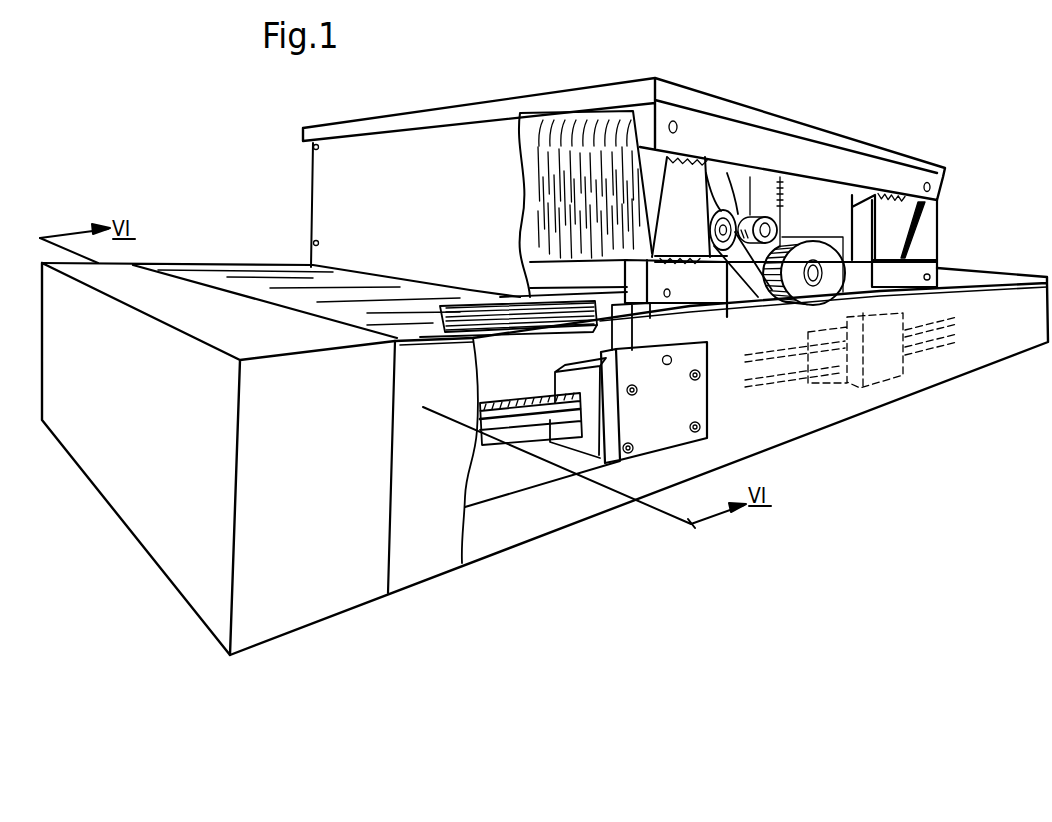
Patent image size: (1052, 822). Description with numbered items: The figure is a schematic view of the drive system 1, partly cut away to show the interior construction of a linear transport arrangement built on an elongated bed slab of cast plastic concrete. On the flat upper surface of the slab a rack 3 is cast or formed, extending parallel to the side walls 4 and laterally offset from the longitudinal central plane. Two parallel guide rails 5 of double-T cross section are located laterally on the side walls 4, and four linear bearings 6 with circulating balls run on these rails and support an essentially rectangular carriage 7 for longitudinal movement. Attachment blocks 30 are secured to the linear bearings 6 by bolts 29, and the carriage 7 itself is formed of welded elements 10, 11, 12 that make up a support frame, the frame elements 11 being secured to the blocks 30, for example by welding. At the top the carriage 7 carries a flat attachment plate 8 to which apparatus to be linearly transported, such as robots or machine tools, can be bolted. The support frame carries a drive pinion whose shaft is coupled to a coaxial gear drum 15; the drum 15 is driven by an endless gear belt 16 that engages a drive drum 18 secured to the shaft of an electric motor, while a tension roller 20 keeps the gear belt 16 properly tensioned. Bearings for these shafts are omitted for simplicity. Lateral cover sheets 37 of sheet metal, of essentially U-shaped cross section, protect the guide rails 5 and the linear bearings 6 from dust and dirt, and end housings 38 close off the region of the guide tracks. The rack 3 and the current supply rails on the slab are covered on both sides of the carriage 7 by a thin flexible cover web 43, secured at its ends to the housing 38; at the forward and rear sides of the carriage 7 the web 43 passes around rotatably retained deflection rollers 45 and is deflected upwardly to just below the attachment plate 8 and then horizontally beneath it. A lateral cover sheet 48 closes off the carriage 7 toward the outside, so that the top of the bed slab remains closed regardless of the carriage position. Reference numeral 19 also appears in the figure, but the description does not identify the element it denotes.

The drive system 1 is at (507, 477).
The rack 3 is at (503, 326).
The side walls 4 is at (540, 513).
The guide rails 5 is at (540, 440).
The linear bearings 6 is at (575, 443).
The carriage 7 is at (947, 226).
The attachment plate 8 is at (812, 135).
The welded element 10 is at (710, 130).
The frame element 11 is at (682, 190).
The welded element 12 is at (655, 278).
The gear drum 15 is at (723, 213).
The gear belt 16 is at (777, 303).
The drive drum 18 is at (820, 248).
The adjusting rod 19 is at (782, 204).
The tension roller 20 is at (766, 219).
The bolts 29 is at (664, 450).
The attachment blocks 30 is at (668, 437).
The cover sheets 37 is at (432, 557).
The end housings 38 is at (309, 607).
The cover web 43 is at (265, 283).
The deflection rollers 45 is at (580, 277).
The lateral cover sheet 48 is at (328, 195).